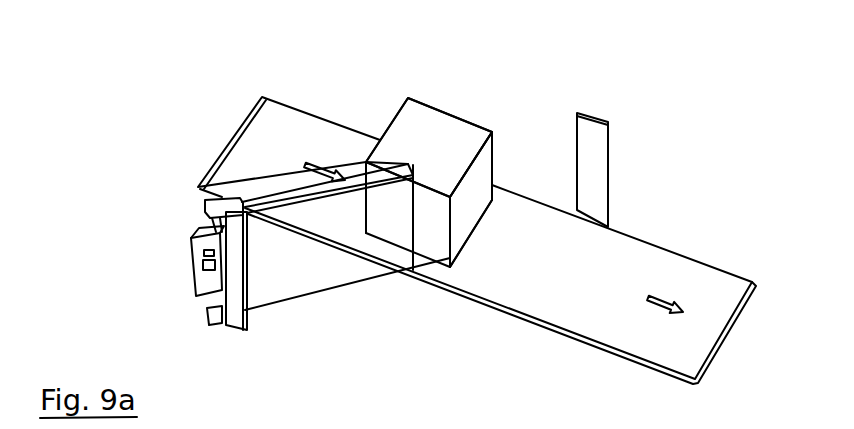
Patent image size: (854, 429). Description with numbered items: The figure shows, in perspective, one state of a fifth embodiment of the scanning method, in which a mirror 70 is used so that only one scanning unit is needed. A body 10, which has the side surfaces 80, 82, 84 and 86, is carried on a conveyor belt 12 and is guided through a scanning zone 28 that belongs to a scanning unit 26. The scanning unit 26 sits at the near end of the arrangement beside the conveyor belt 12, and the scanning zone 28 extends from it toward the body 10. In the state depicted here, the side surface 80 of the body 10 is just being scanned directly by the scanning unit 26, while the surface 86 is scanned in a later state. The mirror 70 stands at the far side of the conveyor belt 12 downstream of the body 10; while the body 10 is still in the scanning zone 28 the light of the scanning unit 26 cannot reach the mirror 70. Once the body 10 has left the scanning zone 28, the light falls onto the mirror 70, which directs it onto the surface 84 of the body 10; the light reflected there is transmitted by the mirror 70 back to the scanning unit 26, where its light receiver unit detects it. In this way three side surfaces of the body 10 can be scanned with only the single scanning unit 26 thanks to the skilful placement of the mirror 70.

The body 10 is at (428, 150).
The conveyor belt 12 is at (610, 292).
The scanning unit 26 is at (225, 273).
The scanning zone 28 is at (298, 260).
The mirror 70 is at (596, 157).
The side surface 80 is at (440, 222).
The side surface 82 is at (480, 172).
The side surface 84 is at (465, 108).
The side surface 86 is at (393, 115).